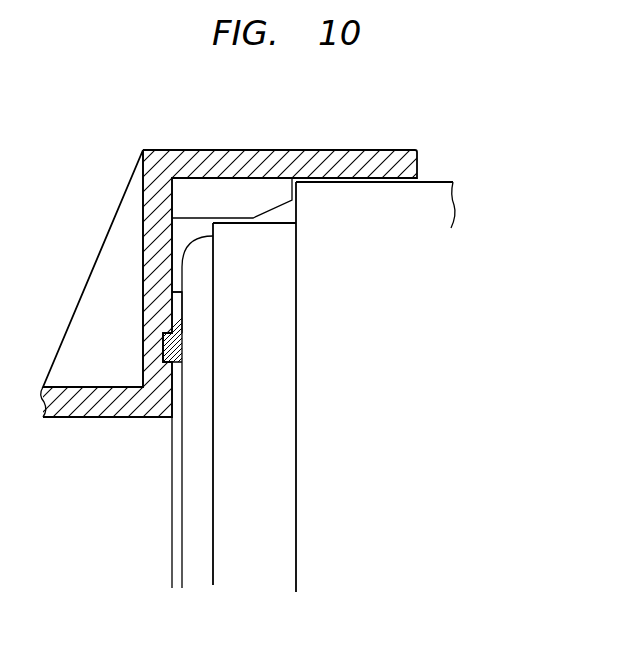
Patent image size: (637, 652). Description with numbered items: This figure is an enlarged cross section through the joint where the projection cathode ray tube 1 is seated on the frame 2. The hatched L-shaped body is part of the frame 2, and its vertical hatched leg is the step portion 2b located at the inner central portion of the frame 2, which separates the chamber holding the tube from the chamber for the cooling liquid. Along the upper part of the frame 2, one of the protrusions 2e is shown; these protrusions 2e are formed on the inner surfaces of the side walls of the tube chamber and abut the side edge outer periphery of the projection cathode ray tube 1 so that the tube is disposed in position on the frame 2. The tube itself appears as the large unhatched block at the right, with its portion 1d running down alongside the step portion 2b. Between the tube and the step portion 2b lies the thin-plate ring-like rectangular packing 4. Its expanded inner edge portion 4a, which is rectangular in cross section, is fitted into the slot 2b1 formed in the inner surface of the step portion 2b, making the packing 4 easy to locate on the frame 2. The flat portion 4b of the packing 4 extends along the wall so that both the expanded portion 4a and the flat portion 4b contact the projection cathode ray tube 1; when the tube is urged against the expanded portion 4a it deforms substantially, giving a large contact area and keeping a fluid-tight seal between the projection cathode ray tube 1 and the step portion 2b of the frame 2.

The projection cathode ray tube 1 is at (442, 215).
The cylindrical portion of body 1d is at (283, 370).
The frame 2 is at (402, 153).
The step portion 2b is at (147, 270).
The slot 2b1 is at (162, 340).
The protrusions 2e is at (222, 196).
The packing 4 is at (178, 290).
The expanded inner edge portion 4a is at (170, 362).
The flat portion 4b is at (178, 313).